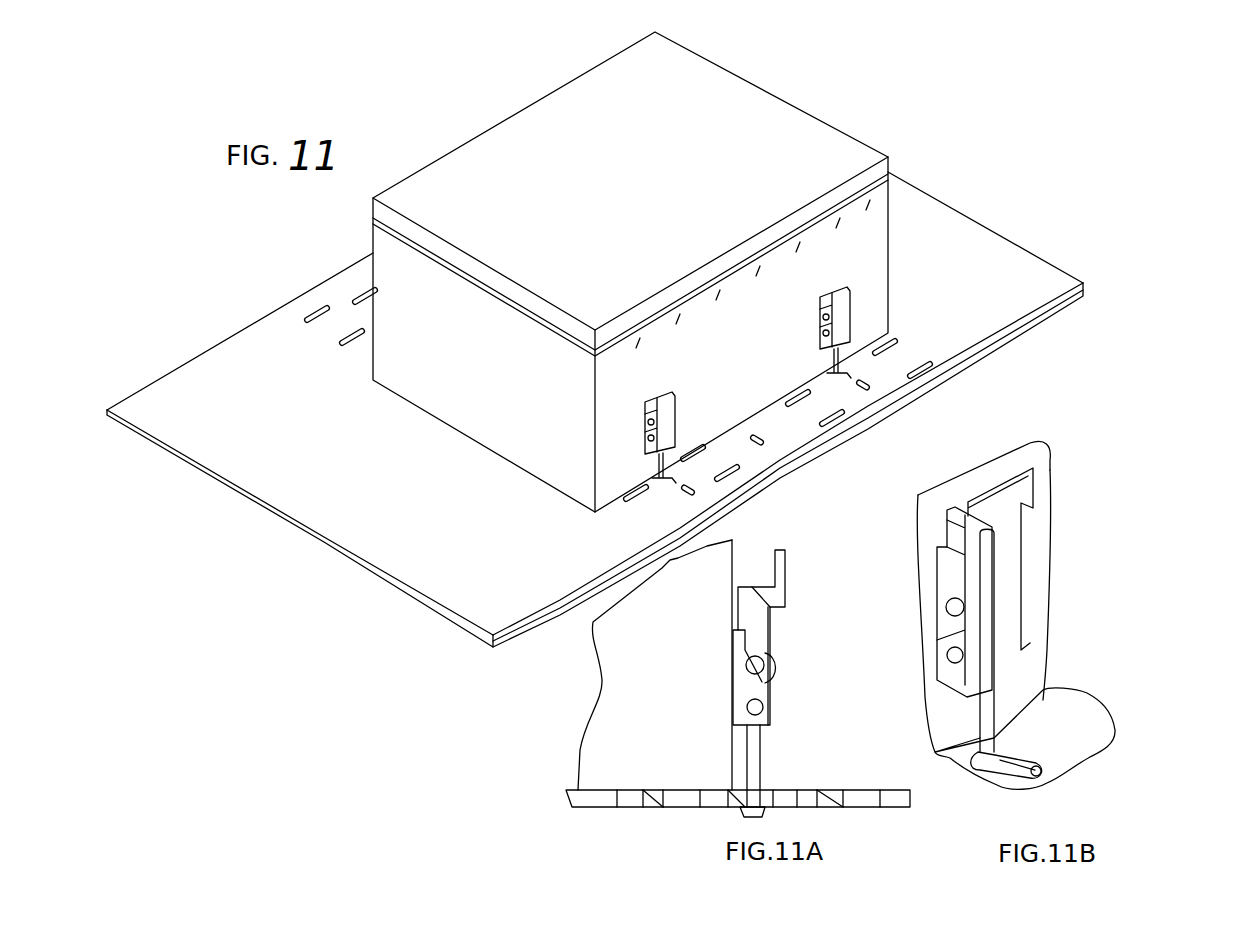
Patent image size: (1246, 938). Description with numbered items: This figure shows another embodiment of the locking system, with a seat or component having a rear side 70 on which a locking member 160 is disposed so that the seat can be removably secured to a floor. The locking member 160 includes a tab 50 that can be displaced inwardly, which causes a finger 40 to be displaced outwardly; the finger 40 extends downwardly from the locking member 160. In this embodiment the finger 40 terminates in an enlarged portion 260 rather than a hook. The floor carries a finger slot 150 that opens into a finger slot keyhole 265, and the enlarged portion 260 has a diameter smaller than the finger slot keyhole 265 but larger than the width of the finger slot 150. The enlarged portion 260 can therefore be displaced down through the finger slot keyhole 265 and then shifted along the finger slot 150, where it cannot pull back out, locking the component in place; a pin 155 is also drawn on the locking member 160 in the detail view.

In FIG. 11, the rear side 70 is at (766, 334).
In FIG. 11, the locking member 160 is at (853, 327).
In FIG. 11B, the locking member 160 is at (1032, 528).
In FIG. 11A, the finger slot 150 is at (773, 794).
In FIG. 11B, the finger slot 150 is at (1027, 708).
In FIG. 11A, the finger slot keyhole 265 is at (817, 790).
In FIG. 11B, the finger slot keyhole 265 is at (1043, 770).
In FIG. 11A, the enlarged portion 260 is at (763, 813).
In FIG. 11B, the tab 50 is at (1050, 447).
In FIG. 11B, the pin 155 is at (957, 610).
In FIG. 11B, the finger 40 is at (990, 678).